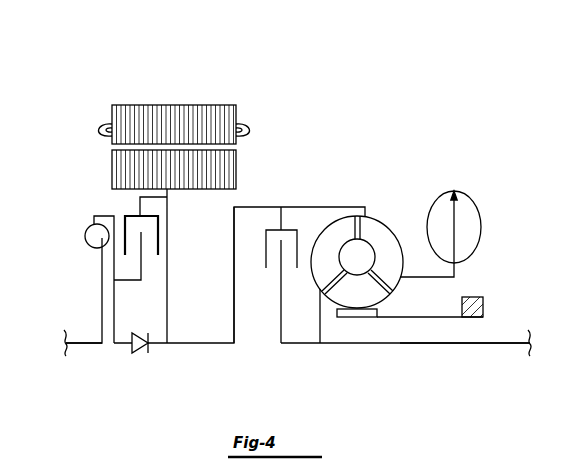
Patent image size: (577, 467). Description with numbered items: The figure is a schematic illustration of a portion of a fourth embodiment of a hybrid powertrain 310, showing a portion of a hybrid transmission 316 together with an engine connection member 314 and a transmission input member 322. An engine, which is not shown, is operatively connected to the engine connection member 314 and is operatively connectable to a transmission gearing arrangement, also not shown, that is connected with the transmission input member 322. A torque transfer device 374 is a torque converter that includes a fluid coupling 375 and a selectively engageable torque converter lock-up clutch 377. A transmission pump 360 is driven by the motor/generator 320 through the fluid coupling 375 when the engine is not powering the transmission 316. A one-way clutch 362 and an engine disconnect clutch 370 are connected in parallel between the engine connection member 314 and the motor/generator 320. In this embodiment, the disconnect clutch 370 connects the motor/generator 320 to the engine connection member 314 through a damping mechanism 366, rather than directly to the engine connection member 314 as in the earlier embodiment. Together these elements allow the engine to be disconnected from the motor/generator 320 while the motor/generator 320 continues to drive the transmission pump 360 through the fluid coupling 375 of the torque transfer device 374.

The hybrid powertrain 310 is at (336, 66).
The engine connection member 314 is at (89, 344).
The hybrid transmission 316 is at (291, 152).
The motor/generator 320 is at (141, 82).
The transmission input member 322 is at (490, 344).
The transmission pump 360 is at (481, 227).
The one-way clutch 362 is at (145, 362).
The damping mechanism 366 is at (68, 229).
The engine disconnect clutch 370 is at (120, 209).
The torque transfer device 374 is at (363, 187).
The fluid coupling 375 is at (400, 216).
The torque converter lock-up clutch 377 is at (262, 278).